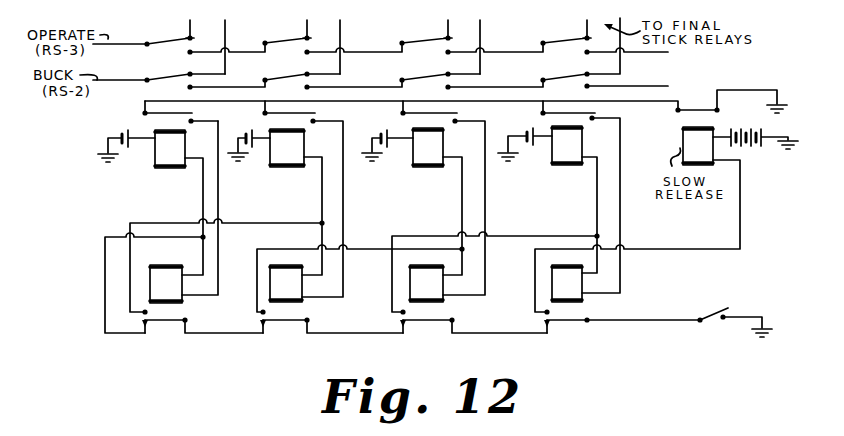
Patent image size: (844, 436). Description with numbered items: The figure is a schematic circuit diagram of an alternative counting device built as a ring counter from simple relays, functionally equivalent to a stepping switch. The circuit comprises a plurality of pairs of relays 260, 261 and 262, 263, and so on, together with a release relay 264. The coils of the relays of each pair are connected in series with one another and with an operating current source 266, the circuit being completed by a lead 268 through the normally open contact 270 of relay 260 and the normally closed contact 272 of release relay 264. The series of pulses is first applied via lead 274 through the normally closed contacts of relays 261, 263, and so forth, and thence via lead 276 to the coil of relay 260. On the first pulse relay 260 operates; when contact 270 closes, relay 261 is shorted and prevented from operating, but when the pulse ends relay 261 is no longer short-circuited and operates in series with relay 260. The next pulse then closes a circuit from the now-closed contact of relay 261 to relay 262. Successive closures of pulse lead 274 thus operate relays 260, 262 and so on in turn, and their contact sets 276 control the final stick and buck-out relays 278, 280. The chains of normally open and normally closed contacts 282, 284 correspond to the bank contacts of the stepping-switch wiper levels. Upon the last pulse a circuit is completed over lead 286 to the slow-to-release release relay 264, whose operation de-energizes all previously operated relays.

The relay 260 is at (170, 149).
The relay 261 is at (166, 284).
The relay 262 is at (287, 148).
The relay 263 is at (286, 283).
The release relay 264 is at (692, 146).
The operating current source 266 is at (119, 131).
The lead 268 is at (219, 196).
The normally open contact 270 is at (193, 120).
The normally closed contact 272 is at (703, 104).
The lead 274 is at (642, 320).
The lead 276 is at (182, 44).
The final stick relay 278 is at (189, 27).
The buck-out relay 280 is at (227, 26).
The chain of normally open contacts 282 is at (658, 53).
The chain of normally closed contacts 284 is at (665, 85).
The lead 286 is at (701, 249).